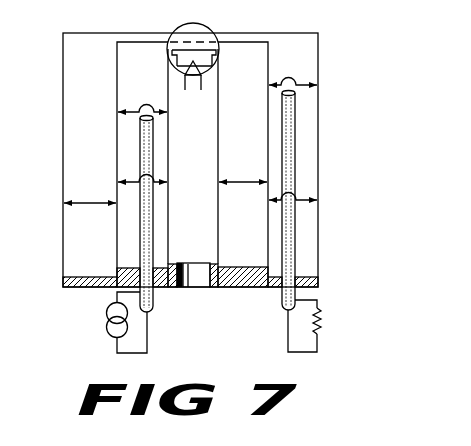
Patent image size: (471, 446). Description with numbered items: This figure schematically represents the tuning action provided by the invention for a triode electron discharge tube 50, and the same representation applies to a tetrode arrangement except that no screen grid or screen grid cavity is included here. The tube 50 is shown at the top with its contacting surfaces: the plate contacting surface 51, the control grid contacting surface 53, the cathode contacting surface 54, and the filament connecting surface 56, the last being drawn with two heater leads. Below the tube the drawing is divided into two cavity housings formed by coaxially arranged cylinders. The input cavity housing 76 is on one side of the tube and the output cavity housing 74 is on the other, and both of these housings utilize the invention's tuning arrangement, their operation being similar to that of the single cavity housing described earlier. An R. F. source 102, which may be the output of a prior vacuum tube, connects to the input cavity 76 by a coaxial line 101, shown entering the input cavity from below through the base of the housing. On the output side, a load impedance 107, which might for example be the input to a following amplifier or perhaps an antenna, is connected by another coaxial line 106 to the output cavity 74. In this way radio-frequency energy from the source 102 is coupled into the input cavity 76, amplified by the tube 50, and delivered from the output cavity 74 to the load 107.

The tube 50 is at (207, 27).
The plate contacting surface 51 is at (173, 32).
The control grid contacting surface 53 is at (172, 51).
The cathode contacting surface 54 is at (216, 52).
The filament connecting surface 56 is at (201, 70).
The output cavity housing 74 is at (102, 61).
The input cavity housing 76 is at (155, 101).
The coaxial line 101 is at (153, 303).
The R. F. source 102 is at (107, 328).
The coaxial line 106 is at (280, 298).
The load impedance 107 is at (322, 320).